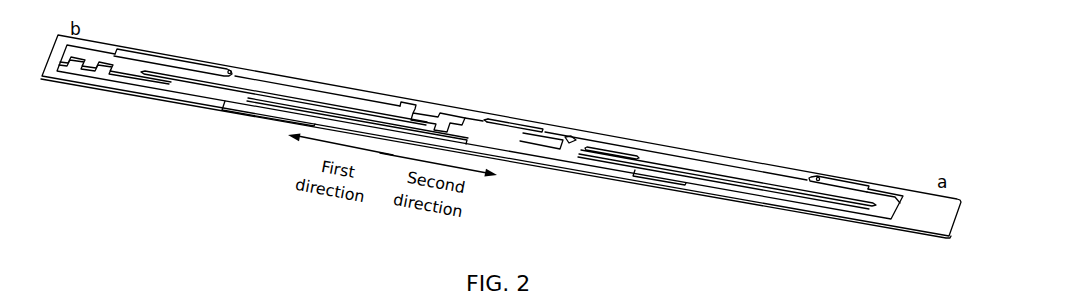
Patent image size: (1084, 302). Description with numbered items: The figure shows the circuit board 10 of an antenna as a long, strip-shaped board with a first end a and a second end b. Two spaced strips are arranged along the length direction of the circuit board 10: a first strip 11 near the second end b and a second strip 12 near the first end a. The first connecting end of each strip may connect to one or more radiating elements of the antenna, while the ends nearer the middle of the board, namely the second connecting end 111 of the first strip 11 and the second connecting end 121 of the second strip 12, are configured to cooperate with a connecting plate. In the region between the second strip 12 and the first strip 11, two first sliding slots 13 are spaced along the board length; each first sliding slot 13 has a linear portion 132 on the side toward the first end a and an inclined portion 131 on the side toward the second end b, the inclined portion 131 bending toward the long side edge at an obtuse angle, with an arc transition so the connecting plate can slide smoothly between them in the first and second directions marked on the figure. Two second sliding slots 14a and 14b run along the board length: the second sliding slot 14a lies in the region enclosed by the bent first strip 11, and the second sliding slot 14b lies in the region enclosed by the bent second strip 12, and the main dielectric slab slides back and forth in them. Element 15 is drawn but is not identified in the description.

The circuit board 10 is at (392, 53).
The first strip 11 is at (172, 56).
The second connecting end 111 is at (457, 117).
The second strip 12 is at (830, 173).
The second connecting end 121 is at (567, 140).
The first sliding slot 13 is at (552, 64).
The inclined portion 131 is at (488, 122).
The linear portion 132 is at (517, 122).
The second sliding slot 14a is at (232, 100).
The second sliding slot 14b is at (690, 170).
The housing frame 15 is at (660, 140).